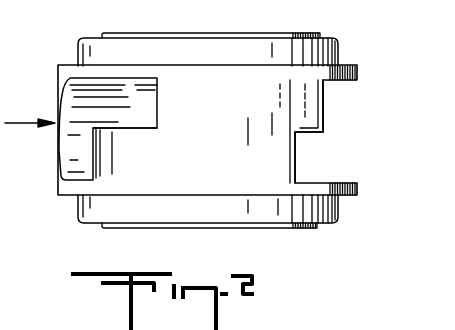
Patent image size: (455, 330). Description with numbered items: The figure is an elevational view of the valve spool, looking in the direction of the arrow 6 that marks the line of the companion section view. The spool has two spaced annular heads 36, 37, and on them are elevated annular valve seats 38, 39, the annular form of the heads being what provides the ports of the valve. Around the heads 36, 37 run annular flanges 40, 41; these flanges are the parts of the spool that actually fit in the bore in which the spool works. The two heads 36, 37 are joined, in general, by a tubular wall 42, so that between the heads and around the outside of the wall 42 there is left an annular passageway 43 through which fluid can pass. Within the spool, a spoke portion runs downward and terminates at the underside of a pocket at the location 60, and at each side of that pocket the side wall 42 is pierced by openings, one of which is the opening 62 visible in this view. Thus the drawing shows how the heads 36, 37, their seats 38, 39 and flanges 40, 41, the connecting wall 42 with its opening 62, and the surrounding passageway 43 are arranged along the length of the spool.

The section view arrow 6 is at (30, 117).
The annular head 36 is at (328, 50).
The annular head 37 is at (330, 210).
The elevated annular valve seat 38 is at (303, 33).
The elevated annular valve seat 39 is at (297, 228).
The annular flange 40 is at (357, 72).
The annular flange 41 is at (357, 187).
The tubular wall 42 is at (228, 150).
The annular passageway 43 is at (338, 100).
The termination of spoke portion 60 is at (136, 128).
The opening 62 is at (152, 118).